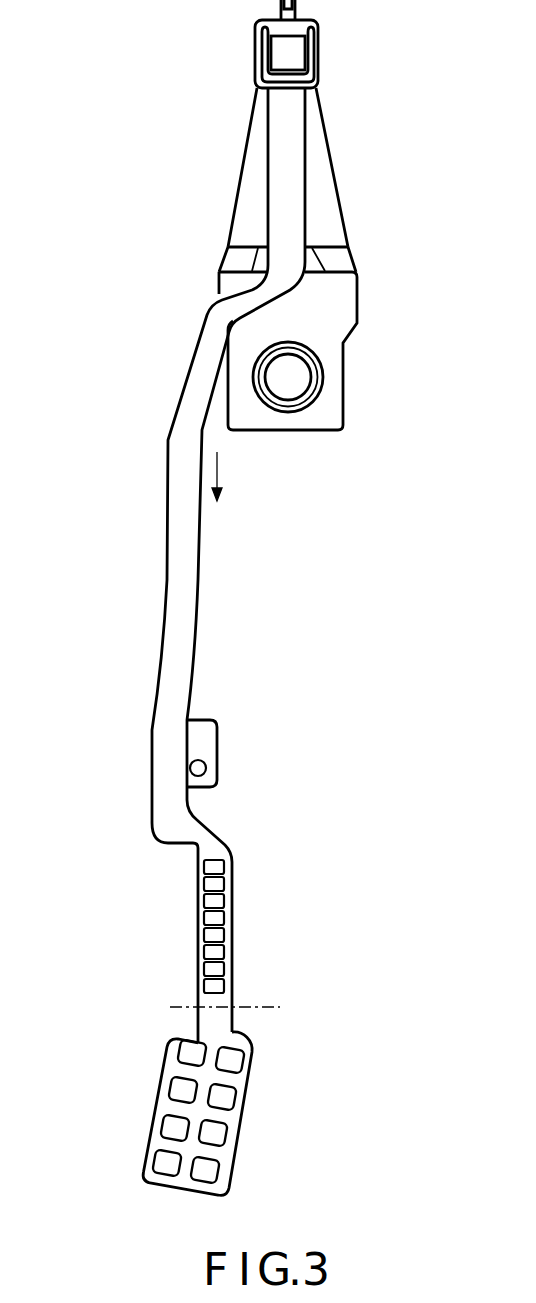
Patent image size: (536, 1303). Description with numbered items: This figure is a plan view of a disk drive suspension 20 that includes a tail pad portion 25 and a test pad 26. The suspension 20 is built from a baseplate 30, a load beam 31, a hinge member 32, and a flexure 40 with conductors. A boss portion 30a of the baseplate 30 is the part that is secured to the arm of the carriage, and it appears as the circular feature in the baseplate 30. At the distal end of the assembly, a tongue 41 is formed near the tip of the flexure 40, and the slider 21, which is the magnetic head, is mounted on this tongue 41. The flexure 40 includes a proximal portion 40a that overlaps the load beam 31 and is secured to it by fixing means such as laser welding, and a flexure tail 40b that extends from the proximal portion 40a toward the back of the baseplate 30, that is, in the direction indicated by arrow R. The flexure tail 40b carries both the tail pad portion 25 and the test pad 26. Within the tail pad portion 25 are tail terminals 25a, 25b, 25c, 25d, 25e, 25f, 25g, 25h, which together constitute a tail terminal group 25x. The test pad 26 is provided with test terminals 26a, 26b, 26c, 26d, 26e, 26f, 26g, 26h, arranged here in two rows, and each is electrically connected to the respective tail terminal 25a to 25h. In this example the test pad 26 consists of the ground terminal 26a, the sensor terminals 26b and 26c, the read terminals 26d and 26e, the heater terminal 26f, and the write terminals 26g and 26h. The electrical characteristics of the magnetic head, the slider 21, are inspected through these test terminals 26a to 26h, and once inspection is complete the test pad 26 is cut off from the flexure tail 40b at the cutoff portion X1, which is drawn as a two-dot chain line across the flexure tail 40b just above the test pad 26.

The suspension 20 is at (146, 249).
The slider 21 is at (281, 52).
The tongue 41 is at (290, 73).
The load beam 31 is at (325, 188).
The hinge member 32 is at (342, 260).
The baseplate 30 is at (345, 307).
The boss portion 30a is at (315, 383).
The flexure 40 is at (167, 445).
The proximal portion 40a is at (282, 162).
The flexure tail 40b is at (163, 765).
The arrow R is at (219, 470).
The tail pad portion 25 is at (204, 908).
The tail terminal 25a is at (222, 867).
The tail terminal 25b is at (222, 884).
The tail terminal 25c is at (222, 901).
The tail terminal 25d is at (222, 918).
The tail terminal 25e is at (222, 935).
The tail terminal 25f is at (222, 952).
The tail terminal 25g is at (222, 969).
The tail terminal 25h is at (222, 986).
The tail terminal group 25x is at (381, 778).
The cutoff portion X1 is at (240, 1007).
The test pad 26 is at (173, 1036).
The ground terminal 26a is at (158, 1165).
The sensor terminal 26b is at (166, 1127).
The sensor terminal 26c is at (173, 1089).
The read terminal 26d is at (182, 1051).
The read terminal 26e is at (231, 1063).
The heater terminal 26f is at (224, 1098).
The write terminal 26g is at (215, 1136).
The write terminal 26h is at (208, 1173).